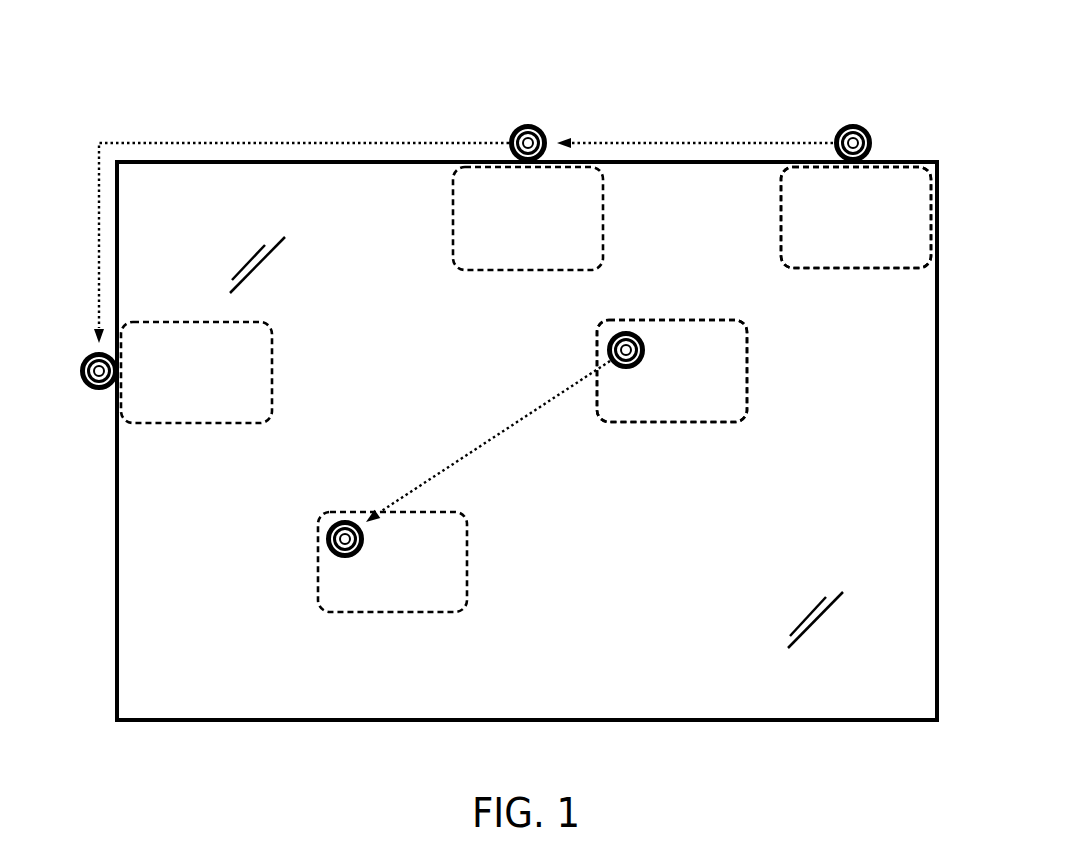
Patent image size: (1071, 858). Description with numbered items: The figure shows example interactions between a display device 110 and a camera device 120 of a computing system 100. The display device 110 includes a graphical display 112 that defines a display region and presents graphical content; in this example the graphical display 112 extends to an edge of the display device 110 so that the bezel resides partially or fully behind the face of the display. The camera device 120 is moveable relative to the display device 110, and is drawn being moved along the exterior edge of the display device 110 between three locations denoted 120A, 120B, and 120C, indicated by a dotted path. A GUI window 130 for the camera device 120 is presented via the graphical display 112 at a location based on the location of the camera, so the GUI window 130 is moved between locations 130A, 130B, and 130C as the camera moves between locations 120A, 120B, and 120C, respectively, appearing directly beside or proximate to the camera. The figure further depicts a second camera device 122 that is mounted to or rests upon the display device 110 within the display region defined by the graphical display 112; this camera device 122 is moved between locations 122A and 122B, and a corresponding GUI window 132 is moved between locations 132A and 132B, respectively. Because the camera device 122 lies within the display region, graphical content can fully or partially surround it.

The computing system 100 is at (852, 56).
The display device 110 is at (213, 720).
The graphical display 112 is at (335, 675).
The camera device 120 is at (829, 121).
The camera device location 120A is at (868, 132).
The camera device location 120B is at (544, 131).
The camera device location 120C is at (86, 360).
The camera device 122 is at (604, 323).
The camera device location 122A is at (630, 332).
The camera device location 122B is at (352, 520).
The GUI window 130 is at (861, 284).
The GUI window location 130A is at (856, 217).
The GUI window location 130B is at (528, 218).
The GUI window location 130C is at (196, 372).
The GUI window 132 is at (755, 429).
The GUI window location 132A is at (672, 371).
The GUI window location 132B is at (392, 562).